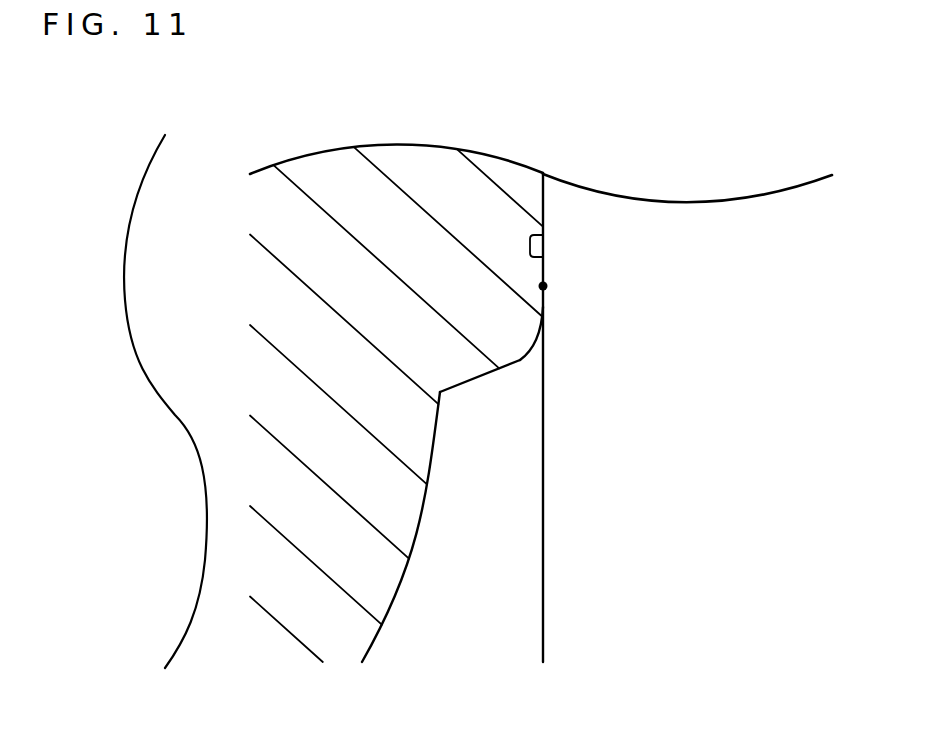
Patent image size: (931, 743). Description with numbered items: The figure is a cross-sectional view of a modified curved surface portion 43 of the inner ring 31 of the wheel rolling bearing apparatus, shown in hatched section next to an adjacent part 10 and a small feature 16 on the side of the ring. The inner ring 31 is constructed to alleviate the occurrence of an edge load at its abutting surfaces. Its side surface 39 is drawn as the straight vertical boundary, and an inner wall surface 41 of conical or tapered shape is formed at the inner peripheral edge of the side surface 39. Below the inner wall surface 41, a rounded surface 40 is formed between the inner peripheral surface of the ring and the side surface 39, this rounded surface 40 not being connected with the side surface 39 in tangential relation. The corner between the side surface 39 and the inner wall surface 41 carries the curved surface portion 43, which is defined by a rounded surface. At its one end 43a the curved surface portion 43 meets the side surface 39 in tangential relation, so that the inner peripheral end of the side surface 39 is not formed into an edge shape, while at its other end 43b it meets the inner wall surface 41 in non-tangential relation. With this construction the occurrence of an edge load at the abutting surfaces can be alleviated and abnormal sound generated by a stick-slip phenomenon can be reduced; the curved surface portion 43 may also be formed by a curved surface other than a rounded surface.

The body surface 10 is at (683, 217).
The inner ring 31 is at (336, 167).
The groove 16 is at (545, 241).
The side surface 39 is at (545, 268).
The one end of the curved surface portion 43a is at (547, 288).
The curved surface portion 43 is at (536, 337).
The other end of the curved surface portion 43b is at (520, 360).
The inner wall surface 41 is at (470, 381).
The rounded surface 40 is at (407, 577).